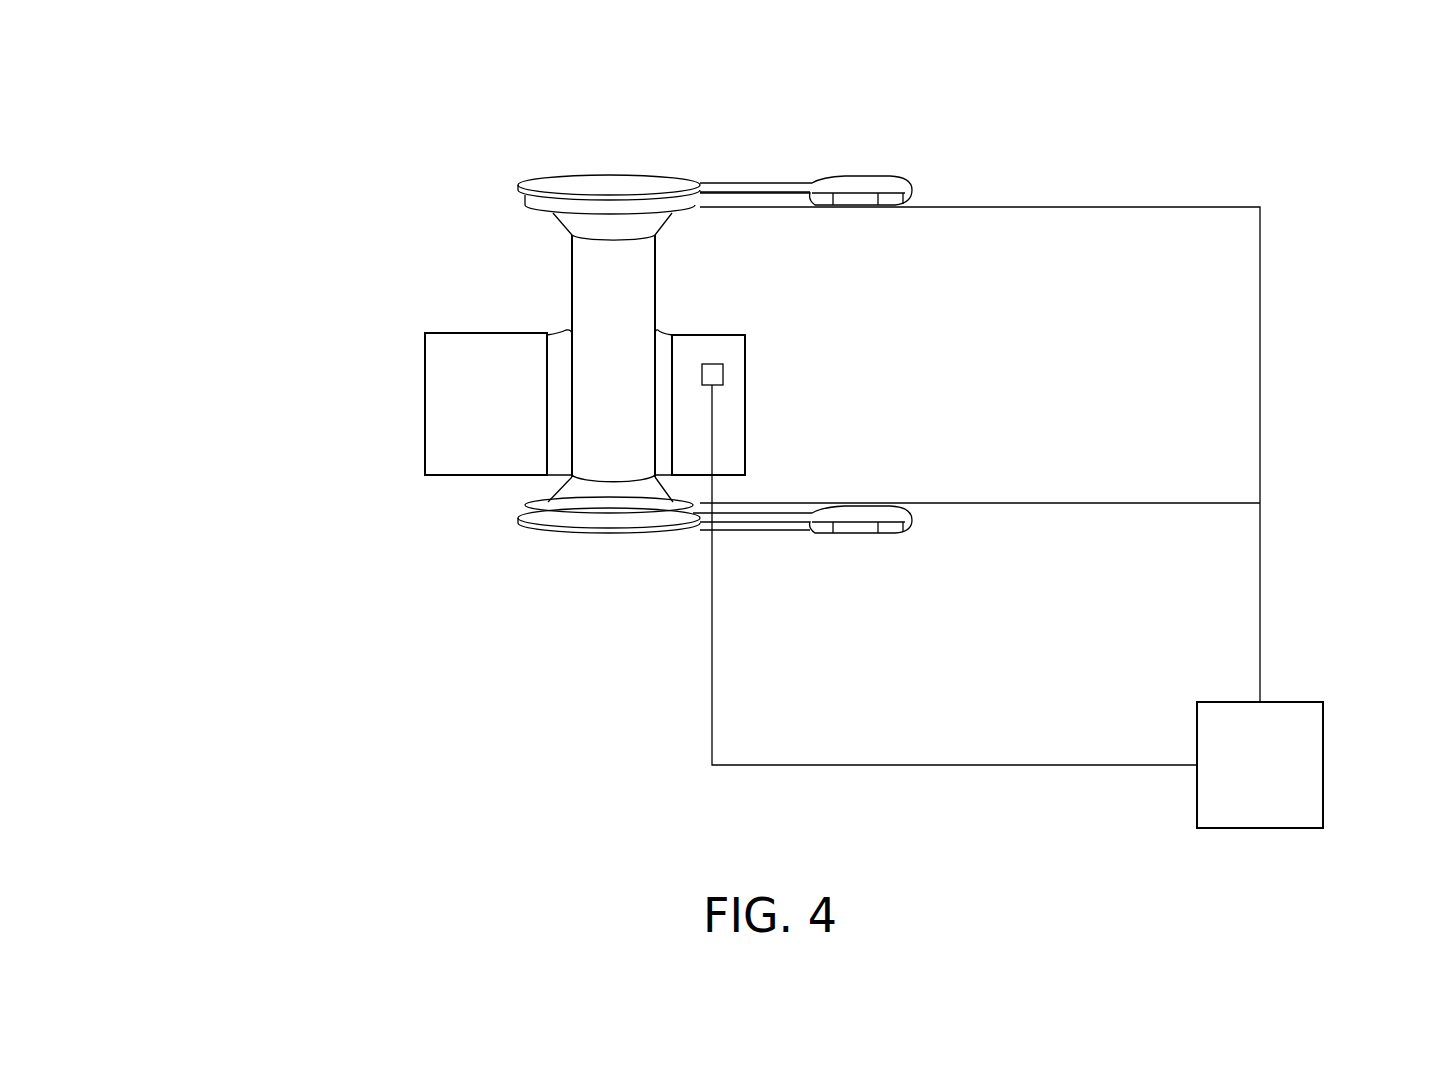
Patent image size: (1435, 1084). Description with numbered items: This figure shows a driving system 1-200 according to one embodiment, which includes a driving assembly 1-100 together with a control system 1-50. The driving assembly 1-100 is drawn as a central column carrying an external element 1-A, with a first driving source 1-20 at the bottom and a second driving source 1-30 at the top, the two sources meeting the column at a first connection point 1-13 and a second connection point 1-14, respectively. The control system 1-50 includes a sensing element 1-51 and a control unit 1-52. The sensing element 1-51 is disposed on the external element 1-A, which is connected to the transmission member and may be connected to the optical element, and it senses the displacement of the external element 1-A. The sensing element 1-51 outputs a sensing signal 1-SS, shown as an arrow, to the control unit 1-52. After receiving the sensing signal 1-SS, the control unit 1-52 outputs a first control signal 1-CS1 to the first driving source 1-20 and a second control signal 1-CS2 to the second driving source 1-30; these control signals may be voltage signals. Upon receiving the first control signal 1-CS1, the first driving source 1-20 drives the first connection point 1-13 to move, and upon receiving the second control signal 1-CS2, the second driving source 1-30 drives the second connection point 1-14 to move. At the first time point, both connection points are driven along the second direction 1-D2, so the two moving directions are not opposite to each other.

The driving assembly 1-100 is at (511, 130).
The second driving source 1-30 is at (715, 152).
The second connection point 1-14 is at (553, 217).
The first connection point 1-13 is at (700, 490).
The first driving source 1-20 is at (584, 579).
The external element 1-A is at (453, 408).
The sensing element 1-51 is at (715, 374).
The control unit 1-52 is at (1302, 770).
The sensing signal 1-SS is at (854, 754).
The first control signal 1-CS1 is at (1036, 493).
The second control signal 1-CS2 is at (1036, 197).
The second direction 1-D2 is at (291, 250).
The driving system 1-200 is at (215, 572).
The control system 1-50 is at (280, 668).